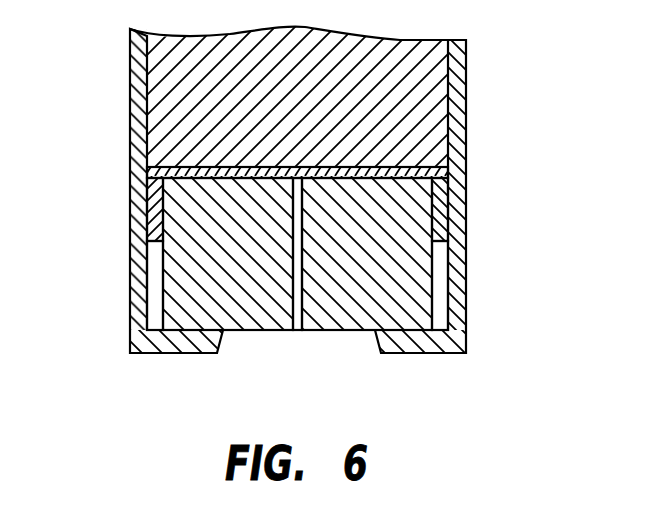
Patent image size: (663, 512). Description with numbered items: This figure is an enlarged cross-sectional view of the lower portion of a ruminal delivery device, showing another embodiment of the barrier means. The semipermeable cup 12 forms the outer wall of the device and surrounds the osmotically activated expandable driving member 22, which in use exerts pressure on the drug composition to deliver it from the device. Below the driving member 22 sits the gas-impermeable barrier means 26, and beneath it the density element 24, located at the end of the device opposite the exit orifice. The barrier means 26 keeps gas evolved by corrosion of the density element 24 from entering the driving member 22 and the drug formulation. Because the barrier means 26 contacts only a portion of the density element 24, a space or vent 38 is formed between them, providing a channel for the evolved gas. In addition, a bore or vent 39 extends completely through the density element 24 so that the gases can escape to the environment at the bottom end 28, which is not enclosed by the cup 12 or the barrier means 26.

The semipermeable cup 12 is at (134, 73).
The osmotically activated expandable driving member 22 is at (408, 87).
The density element 24 is at (413, 289).
The gas-impermeable barrier means 26 is at (155, 211).
The bottom end 28 is at (335, 332).
The vent 38 is at (156, 272).
The bore or vent 39 is at (297, 235).